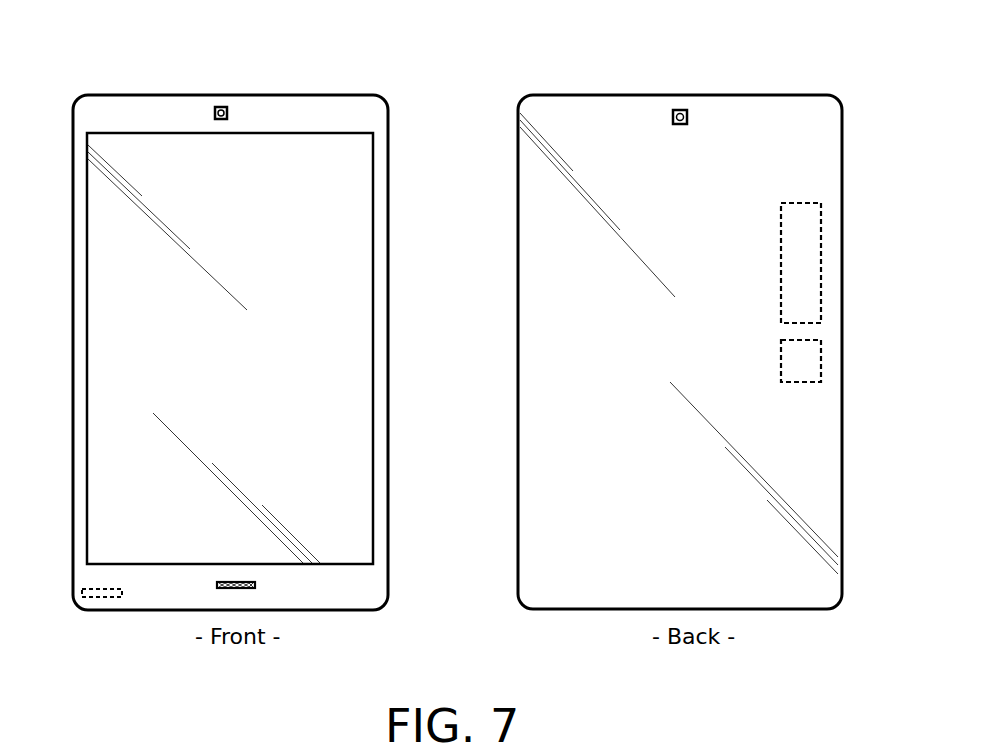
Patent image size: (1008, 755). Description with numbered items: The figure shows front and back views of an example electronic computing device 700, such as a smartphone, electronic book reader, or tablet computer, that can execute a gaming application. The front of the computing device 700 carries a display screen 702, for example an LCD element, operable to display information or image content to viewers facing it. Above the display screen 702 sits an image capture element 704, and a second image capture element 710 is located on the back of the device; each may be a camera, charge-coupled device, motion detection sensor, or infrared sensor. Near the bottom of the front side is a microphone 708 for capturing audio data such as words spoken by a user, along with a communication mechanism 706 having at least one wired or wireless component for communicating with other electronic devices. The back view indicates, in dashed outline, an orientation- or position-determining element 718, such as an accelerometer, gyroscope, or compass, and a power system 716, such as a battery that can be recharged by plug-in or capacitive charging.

The electronic computing device 700 is at (866, 105).
The display screen 702 is at (87, 224).
The image capture element 704 is at (221, 106).
The communication mechanism 706 is at (105, 597).
The microphone 708 is at (255, 588).
The image capture element 710 is at (678, 109).
The power system 716 is at (820, 363).
The orientation- or position-determining element 718 is at (820, 283).